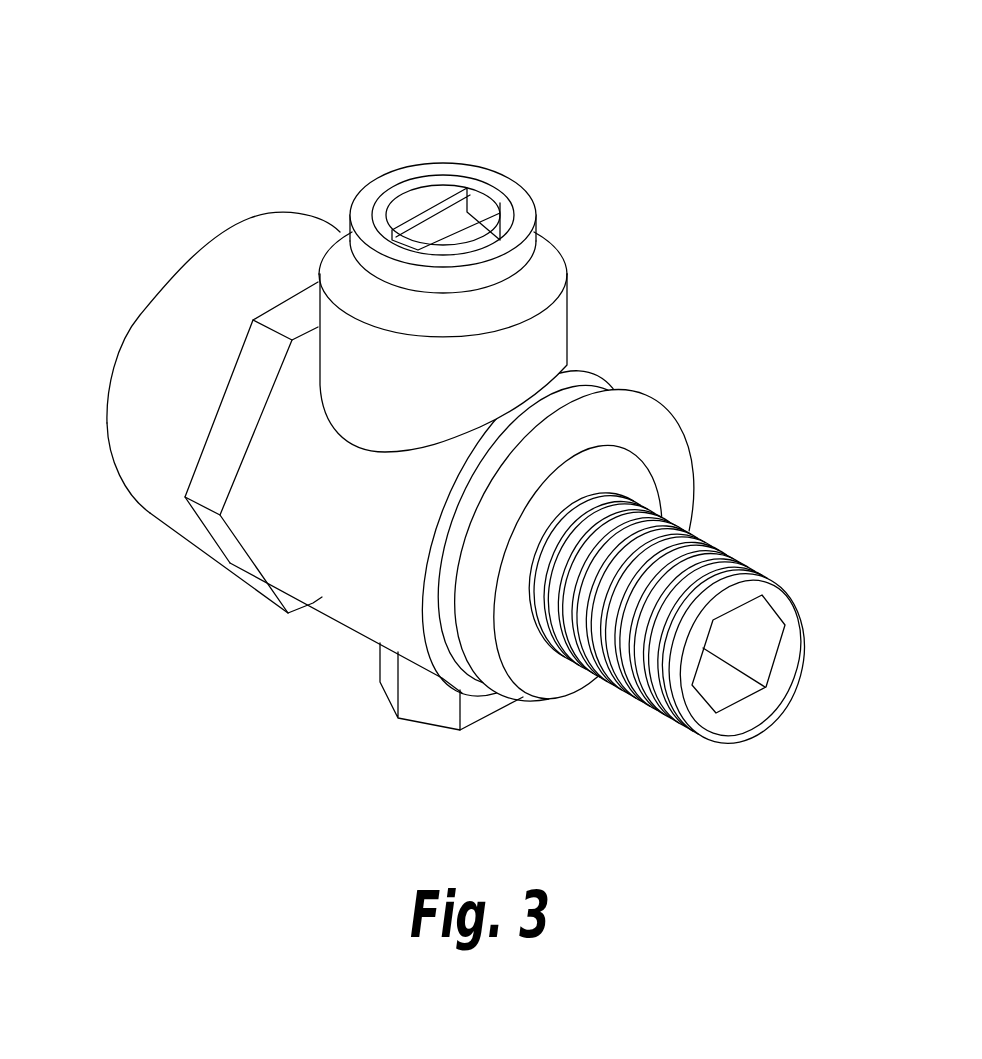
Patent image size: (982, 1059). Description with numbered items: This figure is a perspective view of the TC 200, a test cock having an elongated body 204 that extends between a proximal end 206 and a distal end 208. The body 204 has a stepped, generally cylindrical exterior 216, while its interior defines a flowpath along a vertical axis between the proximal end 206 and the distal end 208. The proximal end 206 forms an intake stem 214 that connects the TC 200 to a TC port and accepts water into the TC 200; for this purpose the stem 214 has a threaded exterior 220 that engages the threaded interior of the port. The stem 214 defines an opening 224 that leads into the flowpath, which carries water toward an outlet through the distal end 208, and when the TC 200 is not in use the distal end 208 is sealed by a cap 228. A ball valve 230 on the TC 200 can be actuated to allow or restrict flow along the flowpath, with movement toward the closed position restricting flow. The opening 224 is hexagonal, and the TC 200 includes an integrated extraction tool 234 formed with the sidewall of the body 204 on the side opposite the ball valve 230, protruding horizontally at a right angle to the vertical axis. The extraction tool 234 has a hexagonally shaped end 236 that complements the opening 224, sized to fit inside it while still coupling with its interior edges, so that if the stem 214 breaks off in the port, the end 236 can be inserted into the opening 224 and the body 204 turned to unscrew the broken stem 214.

The TC 200 is at (461, 426).
The body 204 is at (353, 582).
The proximal end 206 is at (682, 623).
The distal end 208 is at (373, 478).
The intake stem 214 is at (743, 560).
The exterior 216 is at (300, 492).
The threaded exterior 220 is at (647, 540).
The opening 224 is at (760, 655).
The cap 228 is at (180, 352).
The ball valve 230 is at (505, 198).
The extraction tool 234 is at (383, 682).
The hexagonally shaped end 236 is at (425, 720).